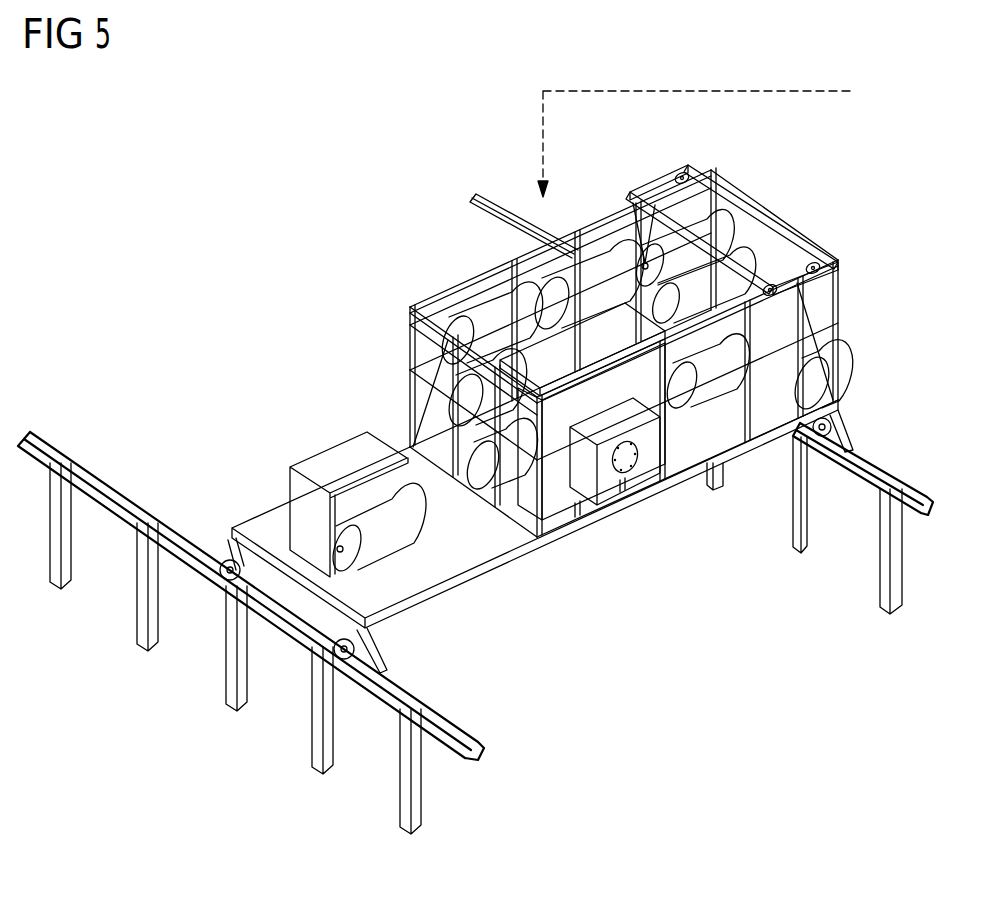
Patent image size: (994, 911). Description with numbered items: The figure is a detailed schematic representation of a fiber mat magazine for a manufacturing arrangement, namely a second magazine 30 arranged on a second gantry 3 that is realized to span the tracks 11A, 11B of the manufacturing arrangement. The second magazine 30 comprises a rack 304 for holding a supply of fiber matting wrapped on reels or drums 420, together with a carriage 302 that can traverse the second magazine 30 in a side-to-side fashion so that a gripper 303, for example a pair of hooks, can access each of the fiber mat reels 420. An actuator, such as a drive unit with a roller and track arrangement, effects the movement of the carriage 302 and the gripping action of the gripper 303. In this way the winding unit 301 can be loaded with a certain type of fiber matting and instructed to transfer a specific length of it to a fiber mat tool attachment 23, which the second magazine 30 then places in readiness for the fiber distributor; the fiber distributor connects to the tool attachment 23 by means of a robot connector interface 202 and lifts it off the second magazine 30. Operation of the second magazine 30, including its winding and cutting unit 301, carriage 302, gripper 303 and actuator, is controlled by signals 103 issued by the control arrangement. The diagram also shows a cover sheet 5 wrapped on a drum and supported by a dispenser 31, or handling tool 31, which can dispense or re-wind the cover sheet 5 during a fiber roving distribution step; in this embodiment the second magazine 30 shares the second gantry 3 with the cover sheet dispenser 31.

The second gantry 3 is at (276, 400).
The cover sheet 5 is at (380, 543).
The track 11A is at (457, 733).
The track 11B is at (890, 480).
The fiber mat tool attachment 23 is at (644, 463).
The second magazine 30 is at (626, 357).
The dispenser 31 is at (300, 498).
The signals 103 is at (690, 90).
The robot connector interface 202 is at (623, 463).
The winding unit 301 is at (530, 483).
The carriage 302 is at (657, 180).
The gripper 303 is at (632, 213).
The rack 304 is at (427, 377).
The fiber mat reels 420 is at (483, 320).